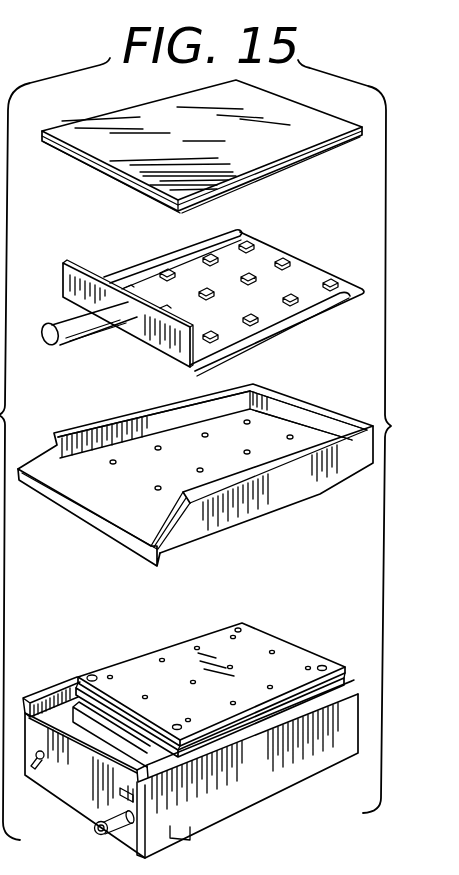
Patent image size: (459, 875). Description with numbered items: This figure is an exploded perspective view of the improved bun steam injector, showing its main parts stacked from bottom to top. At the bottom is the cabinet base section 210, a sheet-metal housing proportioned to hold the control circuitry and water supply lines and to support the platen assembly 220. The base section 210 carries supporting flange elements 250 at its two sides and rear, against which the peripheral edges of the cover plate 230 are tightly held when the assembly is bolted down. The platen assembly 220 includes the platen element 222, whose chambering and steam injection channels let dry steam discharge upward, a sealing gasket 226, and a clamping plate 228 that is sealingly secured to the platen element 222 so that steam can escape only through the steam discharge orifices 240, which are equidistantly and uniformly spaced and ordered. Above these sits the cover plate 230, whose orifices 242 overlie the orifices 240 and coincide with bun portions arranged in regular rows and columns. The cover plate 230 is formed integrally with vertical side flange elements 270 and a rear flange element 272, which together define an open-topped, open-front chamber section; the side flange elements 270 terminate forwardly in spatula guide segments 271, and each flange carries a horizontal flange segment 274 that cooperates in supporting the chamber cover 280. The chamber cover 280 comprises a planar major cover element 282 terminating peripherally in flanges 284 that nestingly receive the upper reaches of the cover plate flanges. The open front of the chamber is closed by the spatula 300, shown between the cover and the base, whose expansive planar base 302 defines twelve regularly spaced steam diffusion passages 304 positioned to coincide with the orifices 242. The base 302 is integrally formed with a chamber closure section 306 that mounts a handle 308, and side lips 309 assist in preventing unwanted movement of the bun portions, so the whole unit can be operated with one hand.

The cabinet base section 210 is at (275, 771).
The platen assembly 220 is at (214, 674).
The platen element 222 is at (102, 731).
The sealing gasket 226 is at (84, 682).
The clamping plate 228 is at (283, 660).
The cover plate 230 is at (195, 475).
The steam discharge orifices 240 is at (270, 688).
The orifices 242 is at (244, 453).
The supporting flange elements 250 is at (40, 697).
The vertical side flange elements 270 is at (83, 452).
The spatula guide segments 271 is at (190, 532).
The rear flange element 272 is at (295, 413).
The horizontal flange segment 274 is at (247, 407).
The chamber cover 280 is at (130, 104).
The planar major cover element 282 is at (204, 128).
The flanges 284 is at (78, 151).
The spatula 300 is at (192, 305).
The planar base 302 is at (182, 262).
The steam diffusion passages 304 is at (290, 300).
The chamber closure section 306 is at (68, 283).
The handle 308 is at (80, 347).
The side lips 309 is at (118, 270).